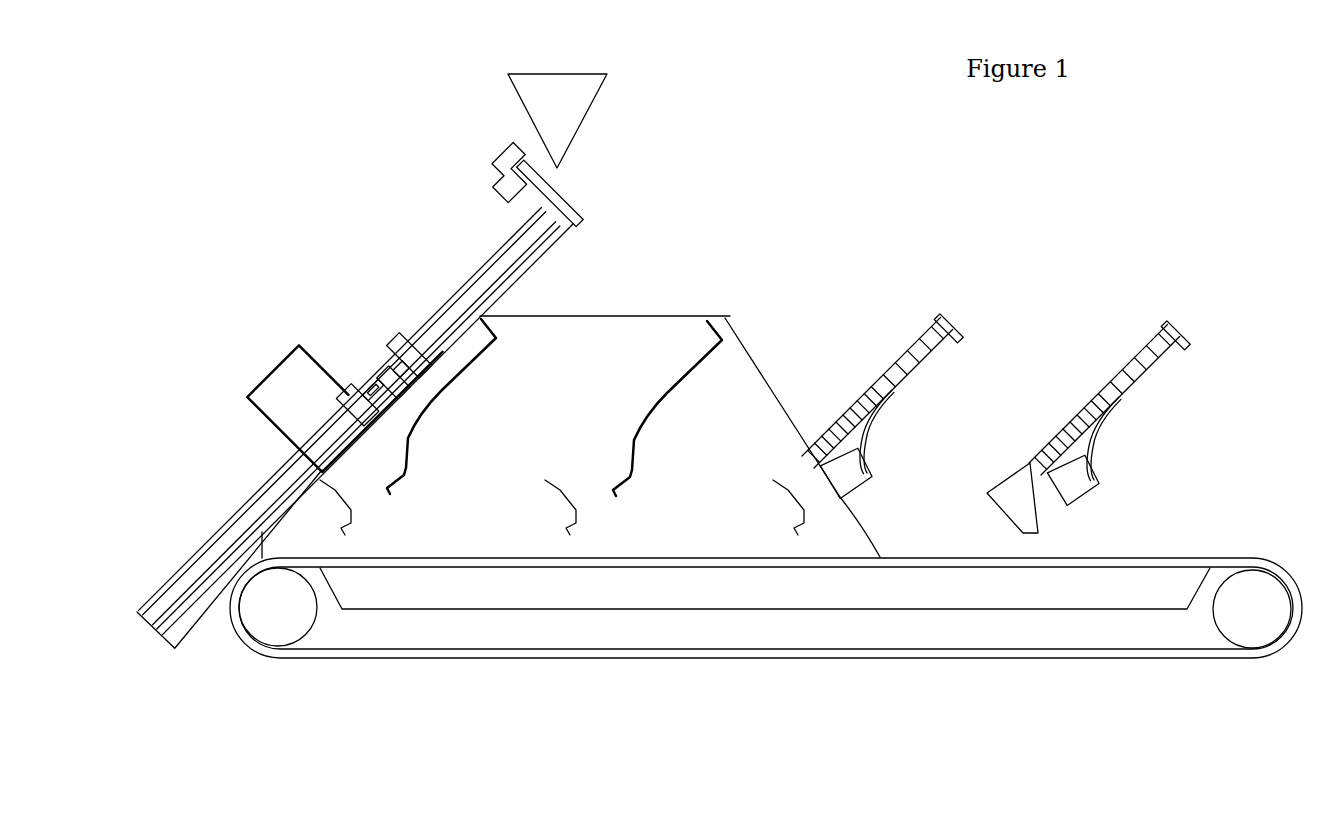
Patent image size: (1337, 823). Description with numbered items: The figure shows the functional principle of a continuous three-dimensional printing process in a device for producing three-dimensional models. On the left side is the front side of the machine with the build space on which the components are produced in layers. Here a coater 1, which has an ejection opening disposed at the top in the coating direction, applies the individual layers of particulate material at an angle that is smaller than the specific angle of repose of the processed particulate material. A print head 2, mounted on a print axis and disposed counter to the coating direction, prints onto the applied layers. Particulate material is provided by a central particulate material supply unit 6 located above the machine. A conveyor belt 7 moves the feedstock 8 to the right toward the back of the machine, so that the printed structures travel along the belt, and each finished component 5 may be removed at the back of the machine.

The coater 1 is at (410, 363).
The print head 2 is at (330, 408).
The finished component 5 is at (724, 320).
The central particulate material supply unit 6 is at (557, 122).
The conveyor belt 7 is at (1113, 568).
The feedstock 8 is at (672, 487).